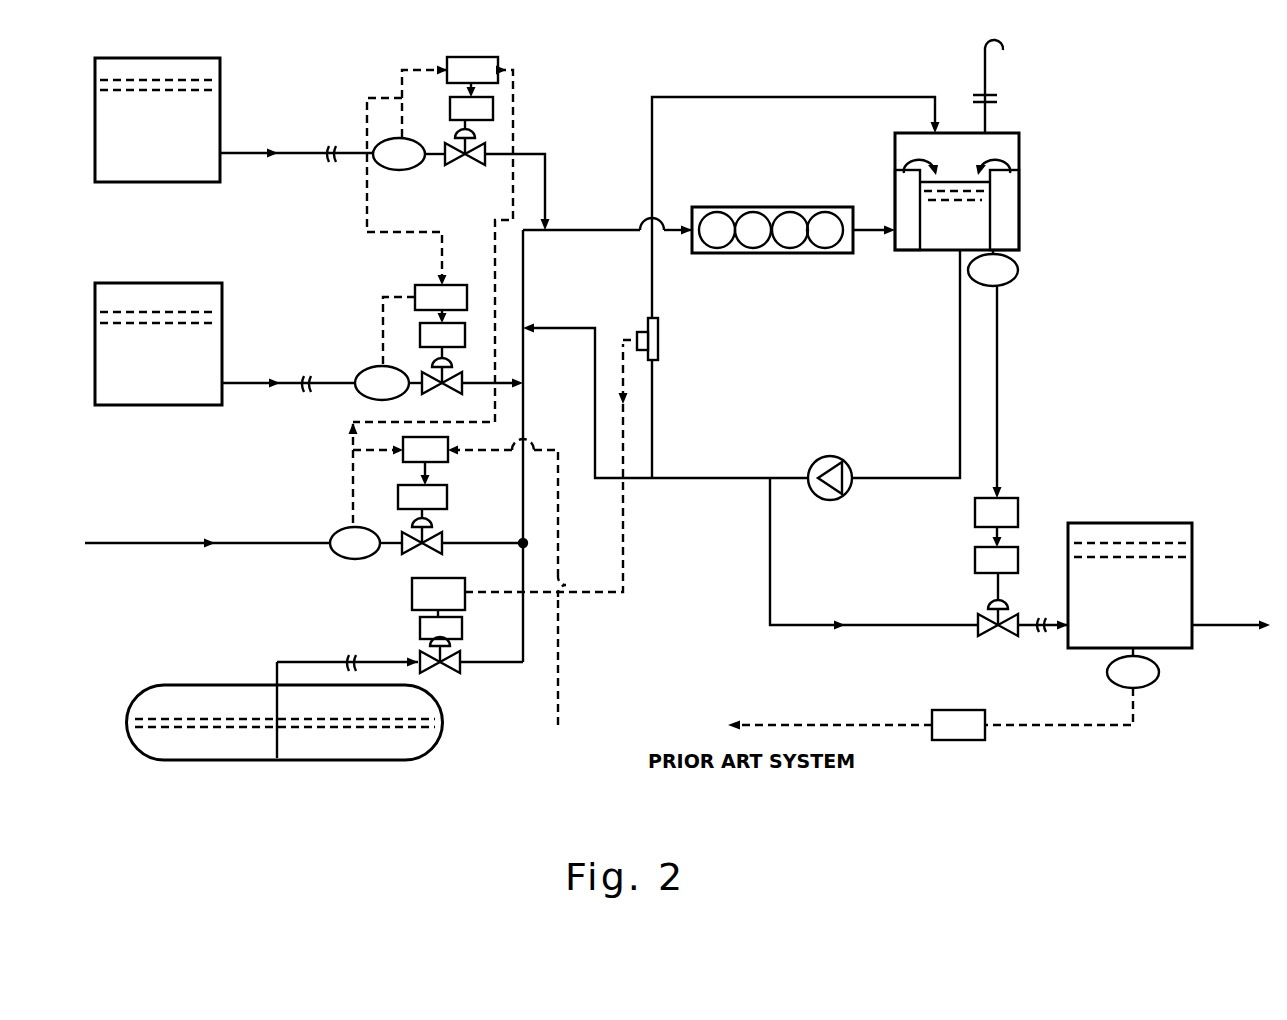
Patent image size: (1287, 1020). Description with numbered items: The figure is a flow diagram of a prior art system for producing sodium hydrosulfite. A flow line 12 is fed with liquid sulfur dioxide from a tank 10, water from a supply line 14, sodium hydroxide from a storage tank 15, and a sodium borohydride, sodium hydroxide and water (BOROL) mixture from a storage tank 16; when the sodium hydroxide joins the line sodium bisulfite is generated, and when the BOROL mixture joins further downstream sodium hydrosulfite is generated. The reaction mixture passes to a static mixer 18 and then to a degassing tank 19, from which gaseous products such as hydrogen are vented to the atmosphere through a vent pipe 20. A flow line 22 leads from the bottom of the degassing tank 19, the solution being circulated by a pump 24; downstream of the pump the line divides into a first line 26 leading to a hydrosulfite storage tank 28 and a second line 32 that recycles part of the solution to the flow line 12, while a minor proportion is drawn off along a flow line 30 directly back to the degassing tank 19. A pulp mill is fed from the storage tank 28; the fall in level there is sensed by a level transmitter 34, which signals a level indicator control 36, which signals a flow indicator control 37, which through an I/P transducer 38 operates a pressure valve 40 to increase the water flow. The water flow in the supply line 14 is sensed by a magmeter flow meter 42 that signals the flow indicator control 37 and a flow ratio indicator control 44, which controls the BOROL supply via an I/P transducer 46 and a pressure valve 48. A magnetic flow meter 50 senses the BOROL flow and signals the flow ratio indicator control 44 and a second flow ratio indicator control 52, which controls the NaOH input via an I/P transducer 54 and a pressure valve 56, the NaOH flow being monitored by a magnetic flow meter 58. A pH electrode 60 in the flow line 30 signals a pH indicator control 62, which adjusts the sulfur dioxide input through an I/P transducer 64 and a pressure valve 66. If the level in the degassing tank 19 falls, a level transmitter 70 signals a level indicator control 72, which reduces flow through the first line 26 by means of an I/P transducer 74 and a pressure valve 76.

The tank 10 is at (432, 747).
The flow line 12 is at (523, 638).
The supply line 14 is at (248, 548).
The storage tank 15 is at (222, 327).
The storage tank 16 is at (222, 111).
The static mixer 18 is at (800, 253).
The degassing tank 19 is at (1019, 188).
The vent pipe 20 is at (985, 73).
The flow line 22 is at (958, 380).
The pump 24 is at (821, 460).
The first line 26 is at (858, 624).
The hydrosulfite storage tank 28 is at (1114, 543).
The flow line 30 is at (653, 420).
The second line 32 is at (595, 403).
The level transmitter 34 is at (1150, 690).
The level indicator control 36 is at (968, 740).
The flow indicator control 37 is at (402, 455).
The current/pressure transducer 38 is at (447, 498).
The pressure valve 40 is at (436, 551).
The water flow meter 42 is at (346, 558).
The flow ratio indicator control 44 is at (478, 57).
The I/P transducer 46 is at (450, 107).
The pressure valve 48 is at (469, 162).
The magnetic flow meter 50 is at (399, 170).
The FRIC 52 is at (432, 287).
The I/P transducer 54 is at (420, 338).
The pressure valve 56 is at (446, 396).
The magnetic flow meter 58 is at (366, 371).
The pH electrode 60 is at (671, 339).
The pH indicator control 62 is at (412, 601).
The I/P transducer 64 is at (462, 629).
The pressure valve 66 is at (455, 672).
The level transmitter 70 is at (1014, 283).
The level indicator control 72 is at (1018, 507).
The I/P transducer 74 is at (975, 561).
The pressure valve 76 is at (1001, 637).